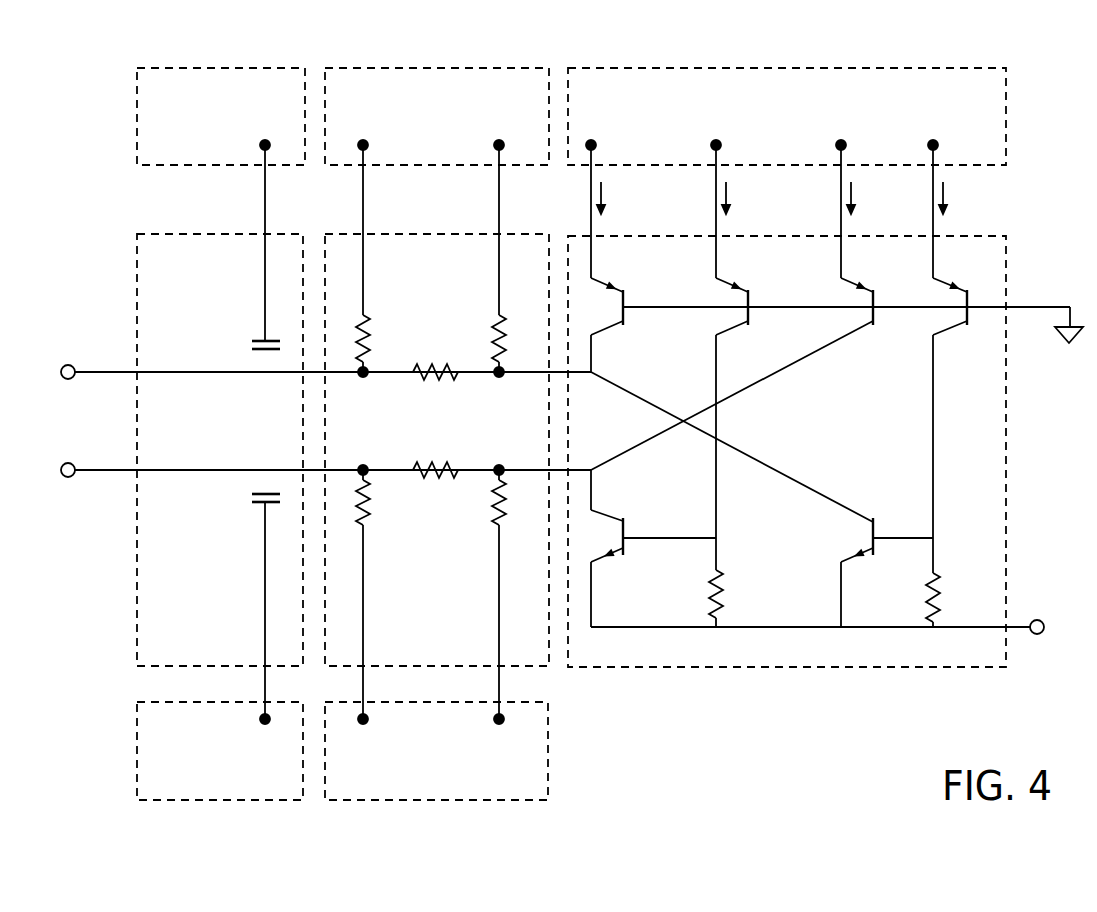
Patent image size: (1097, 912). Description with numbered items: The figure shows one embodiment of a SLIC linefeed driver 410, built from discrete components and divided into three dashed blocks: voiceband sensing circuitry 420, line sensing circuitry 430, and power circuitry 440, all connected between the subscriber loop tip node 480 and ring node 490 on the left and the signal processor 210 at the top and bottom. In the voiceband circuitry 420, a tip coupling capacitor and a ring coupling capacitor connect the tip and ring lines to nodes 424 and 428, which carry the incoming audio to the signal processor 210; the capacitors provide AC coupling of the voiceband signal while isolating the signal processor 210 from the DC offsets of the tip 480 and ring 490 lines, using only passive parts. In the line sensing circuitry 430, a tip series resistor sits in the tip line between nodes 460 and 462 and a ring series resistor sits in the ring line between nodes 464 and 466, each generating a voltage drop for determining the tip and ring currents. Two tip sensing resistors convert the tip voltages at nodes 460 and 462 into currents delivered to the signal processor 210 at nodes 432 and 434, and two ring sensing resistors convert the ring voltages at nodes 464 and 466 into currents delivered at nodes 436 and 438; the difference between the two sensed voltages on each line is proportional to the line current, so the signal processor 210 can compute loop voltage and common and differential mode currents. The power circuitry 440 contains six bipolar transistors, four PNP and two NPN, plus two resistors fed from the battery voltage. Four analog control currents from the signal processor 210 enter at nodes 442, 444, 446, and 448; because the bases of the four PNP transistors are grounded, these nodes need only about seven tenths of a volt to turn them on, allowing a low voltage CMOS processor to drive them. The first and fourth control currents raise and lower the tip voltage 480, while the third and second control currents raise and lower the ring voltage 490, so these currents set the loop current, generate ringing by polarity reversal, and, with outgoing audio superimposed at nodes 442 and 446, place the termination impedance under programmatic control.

The SLIC linefeed driver 410 is at (90, 153).
The voiceband sensing circuitry 420 is at (137, 397).
The node 424 is at (265, 229).
The node 428 is at (265, 626).
The line sensing circuitry 430 is at (542, 666).
The node 432 is at (363, 216).
The node 434 is at (499, 216).
The node 436 is at (363, 638).
The node 438 is at (499, 638).
The power circuitry 440 is at (773, 667).
The node 442 is at (591, 198).
The node 444 is at (716, 198).
The node 446 is at (841, 198).
The node 448 is at (933, 198).
The node 460 is at (363, 387).
The node 462 is at (499, 387).
The node 464 is at (363, 460).
The node 466 is at (499, 460).
The tip node 480 is at (322, 346).
The ring node 490 is at (320, 494).
The signal processor 210 is at (785, 64).